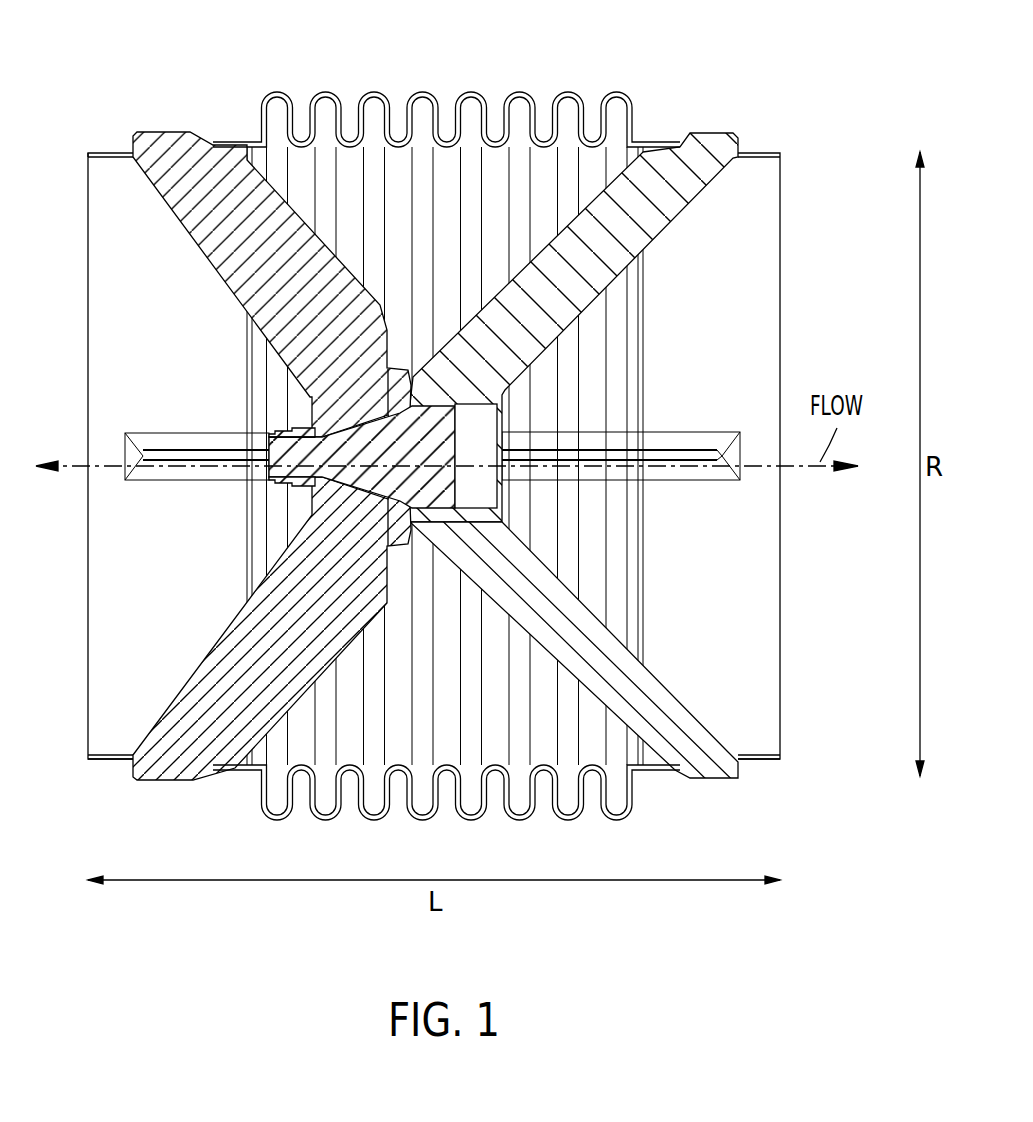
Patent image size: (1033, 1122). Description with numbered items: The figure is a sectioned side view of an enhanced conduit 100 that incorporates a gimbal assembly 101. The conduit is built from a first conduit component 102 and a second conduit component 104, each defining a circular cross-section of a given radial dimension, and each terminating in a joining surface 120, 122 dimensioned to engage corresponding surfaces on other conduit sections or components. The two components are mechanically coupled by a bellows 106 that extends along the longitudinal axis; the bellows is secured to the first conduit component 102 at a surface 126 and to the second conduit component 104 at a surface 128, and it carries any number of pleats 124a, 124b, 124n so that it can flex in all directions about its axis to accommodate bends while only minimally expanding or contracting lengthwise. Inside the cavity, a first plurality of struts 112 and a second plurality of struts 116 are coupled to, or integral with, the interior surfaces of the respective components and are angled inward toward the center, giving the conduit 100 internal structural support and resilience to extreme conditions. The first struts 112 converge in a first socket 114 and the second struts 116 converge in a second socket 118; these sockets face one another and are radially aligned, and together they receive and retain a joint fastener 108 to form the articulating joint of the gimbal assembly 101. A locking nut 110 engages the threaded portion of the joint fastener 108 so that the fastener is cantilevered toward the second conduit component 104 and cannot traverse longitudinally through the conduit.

The enhanced conduit 100 is at (858, 102).
The gimbal assembly 101 is at (472, 486).
The first conduit component 102 is at (112, 230).
The second conduit component 104 is at (757, 250).
The bellows 106 is at (270, 90).
The joint fastener 108 is at (295, 478).
The locking nut 110 is at (300, 436).
The first plurality of struts 112 is at (267, 253).
The first socket 114 is at (322, 422).
The second plurality of struts 116 is at (615, 658).
The second socket 118 is at (478, 440).
The joining surface 120 is at (113, 758).
The joining surface 122 is at (763, 757).
The pleat 124a is at (372, 91).
The pleat 124b is at (466, 91).
The pleat 124n is at (564, 91).
The surface 126 is at (249, 140).
The surface 128 is at (655, 142).